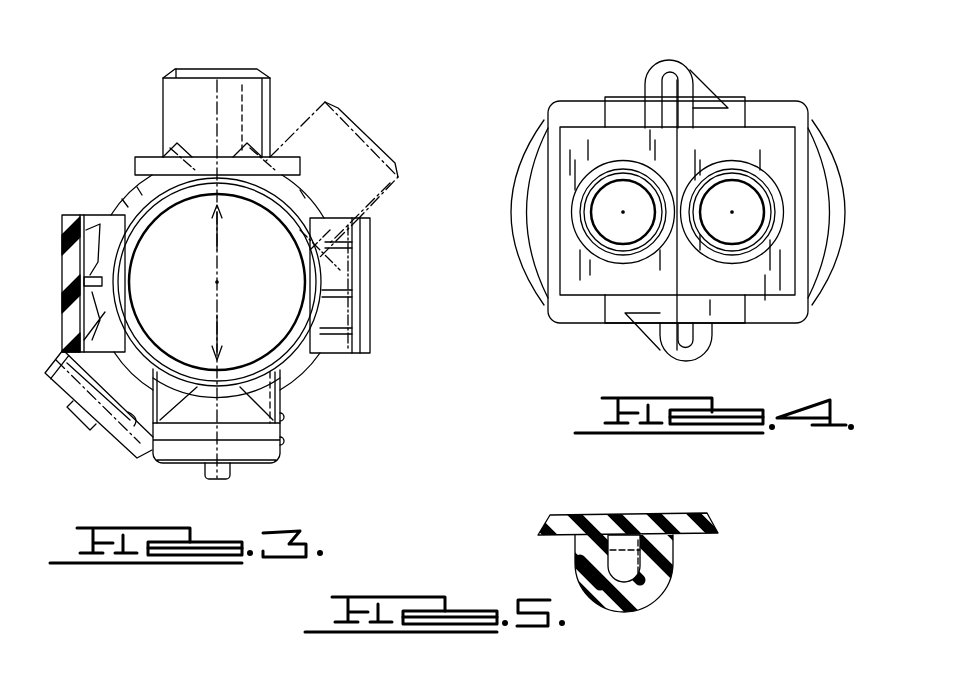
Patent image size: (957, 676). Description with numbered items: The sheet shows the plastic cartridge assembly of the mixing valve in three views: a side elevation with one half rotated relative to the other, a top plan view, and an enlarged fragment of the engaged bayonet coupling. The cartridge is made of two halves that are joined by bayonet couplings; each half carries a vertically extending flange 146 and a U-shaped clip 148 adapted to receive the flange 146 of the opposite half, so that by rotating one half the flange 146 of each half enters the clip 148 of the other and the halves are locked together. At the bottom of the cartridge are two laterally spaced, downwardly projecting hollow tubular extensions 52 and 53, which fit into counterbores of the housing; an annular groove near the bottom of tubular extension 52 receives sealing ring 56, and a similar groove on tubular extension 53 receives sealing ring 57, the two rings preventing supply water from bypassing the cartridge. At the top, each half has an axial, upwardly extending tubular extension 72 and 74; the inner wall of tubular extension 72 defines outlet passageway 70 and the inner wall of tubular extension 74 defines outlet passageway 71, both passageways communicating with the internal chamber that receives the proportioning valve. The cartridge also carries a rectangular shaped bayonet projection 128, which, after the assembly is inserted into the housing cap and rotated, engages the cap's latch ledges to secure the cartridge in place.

In FIG. 3, the tubular extension 52 is at (281, 416).
In FIG. 3, the tubular extension 53 is at (78, 422).
In FIG. 3, the sealing ring 56 is at (282, 441).
In FIG. 3, the sealing ring 57 is at (120, 440).
In FIG. 4, the outlet passageway 70 is at (735, 215).
In FIG. 4, the outlet passageway 71 is at (613, 198).
In FIG. 3, the tubular extension 72 is at (265, 85).
In FIG. 4, the tubular extension 72 is at (805, 212).
In FIG. 3, the tubular extension 74 is at (332, 108).
In FIG. 4, the tubular extension 74 is at (568, 250).
In FIG. 3, the bayonet projection 128 is at (137, 157).
In FIG. 4, the bayonet projection 128 is at (562, 147).
In FIG. 4, the flange 146 is at (670, 92).
In FIG. 5, the flange 146 is at (640, 556).
In FIG. 4, the U-shaped clip 148 is at (667, 63).
In FIG. 5, the U-shaped clip 148 is at (645, 597).